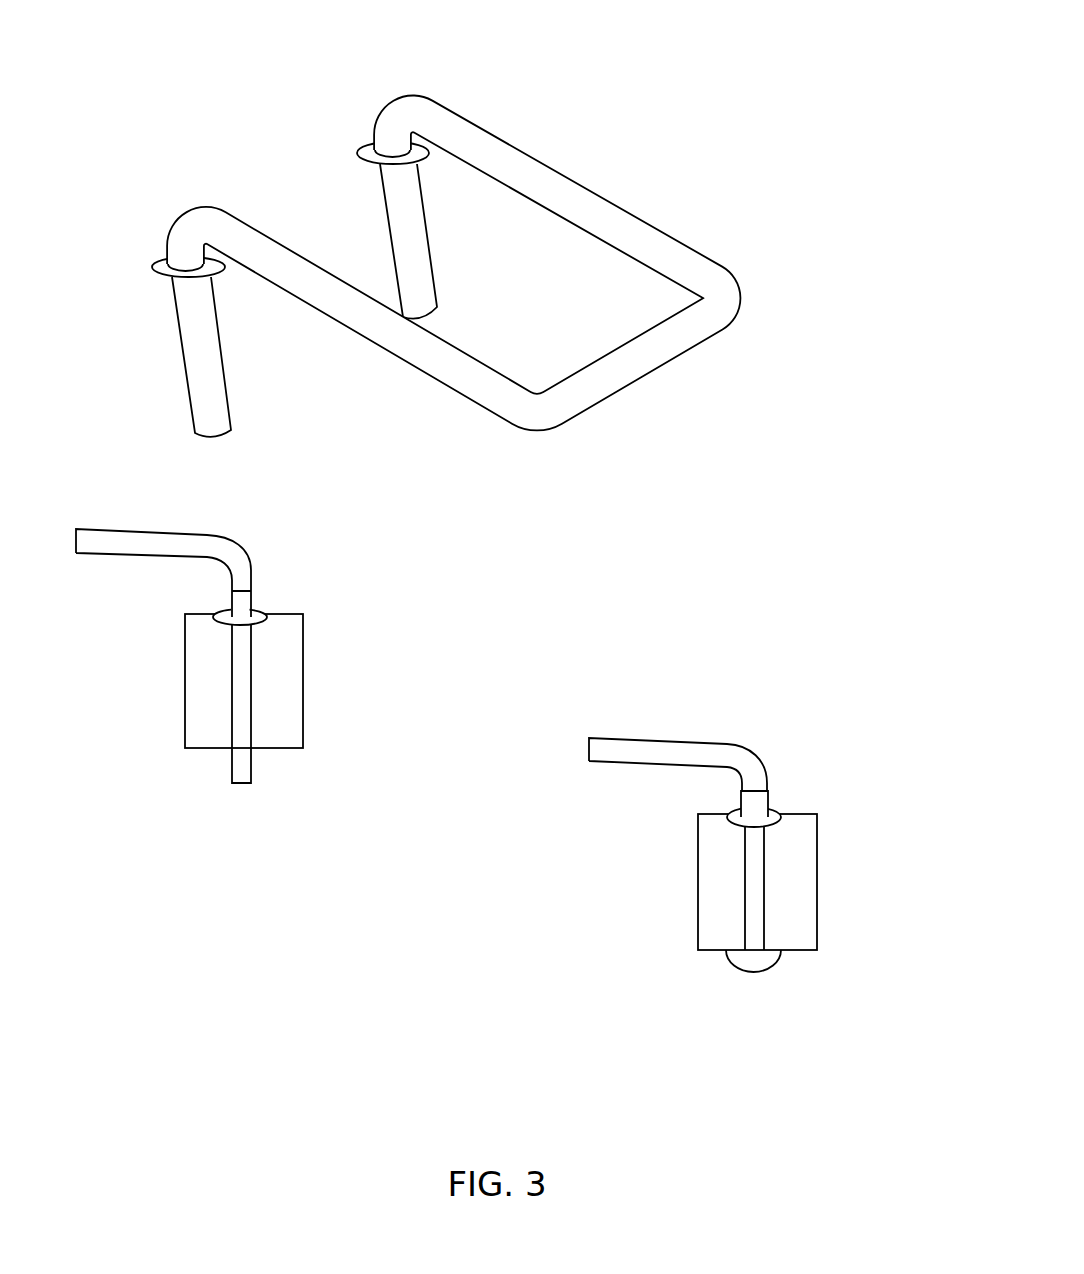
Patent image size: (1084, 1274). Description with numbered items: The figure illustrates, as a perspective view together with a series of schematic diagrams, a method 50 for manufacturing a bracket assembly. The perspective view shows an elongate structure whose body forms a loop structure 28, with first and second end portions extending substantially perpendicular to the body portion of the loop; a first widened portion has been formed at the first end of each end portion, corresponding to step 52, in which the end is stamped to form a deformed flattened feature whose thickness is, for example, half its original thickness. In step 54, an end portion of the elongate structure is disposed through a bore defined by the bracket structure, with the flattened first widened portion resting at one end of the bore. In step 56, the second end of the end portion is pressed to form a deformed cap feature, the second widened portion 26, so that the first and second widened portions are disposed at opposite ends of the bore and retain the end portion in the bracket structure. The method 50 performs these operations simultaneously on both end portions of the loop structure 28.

The method 50 is at (449, 224).
The step 52 is at (449, 275).
The loop structure 28 is at (468, 264).
The second widened portion 26 is at (792, 933).
The step 54 is at (239, 636).
The step 56 is at (740, 865).